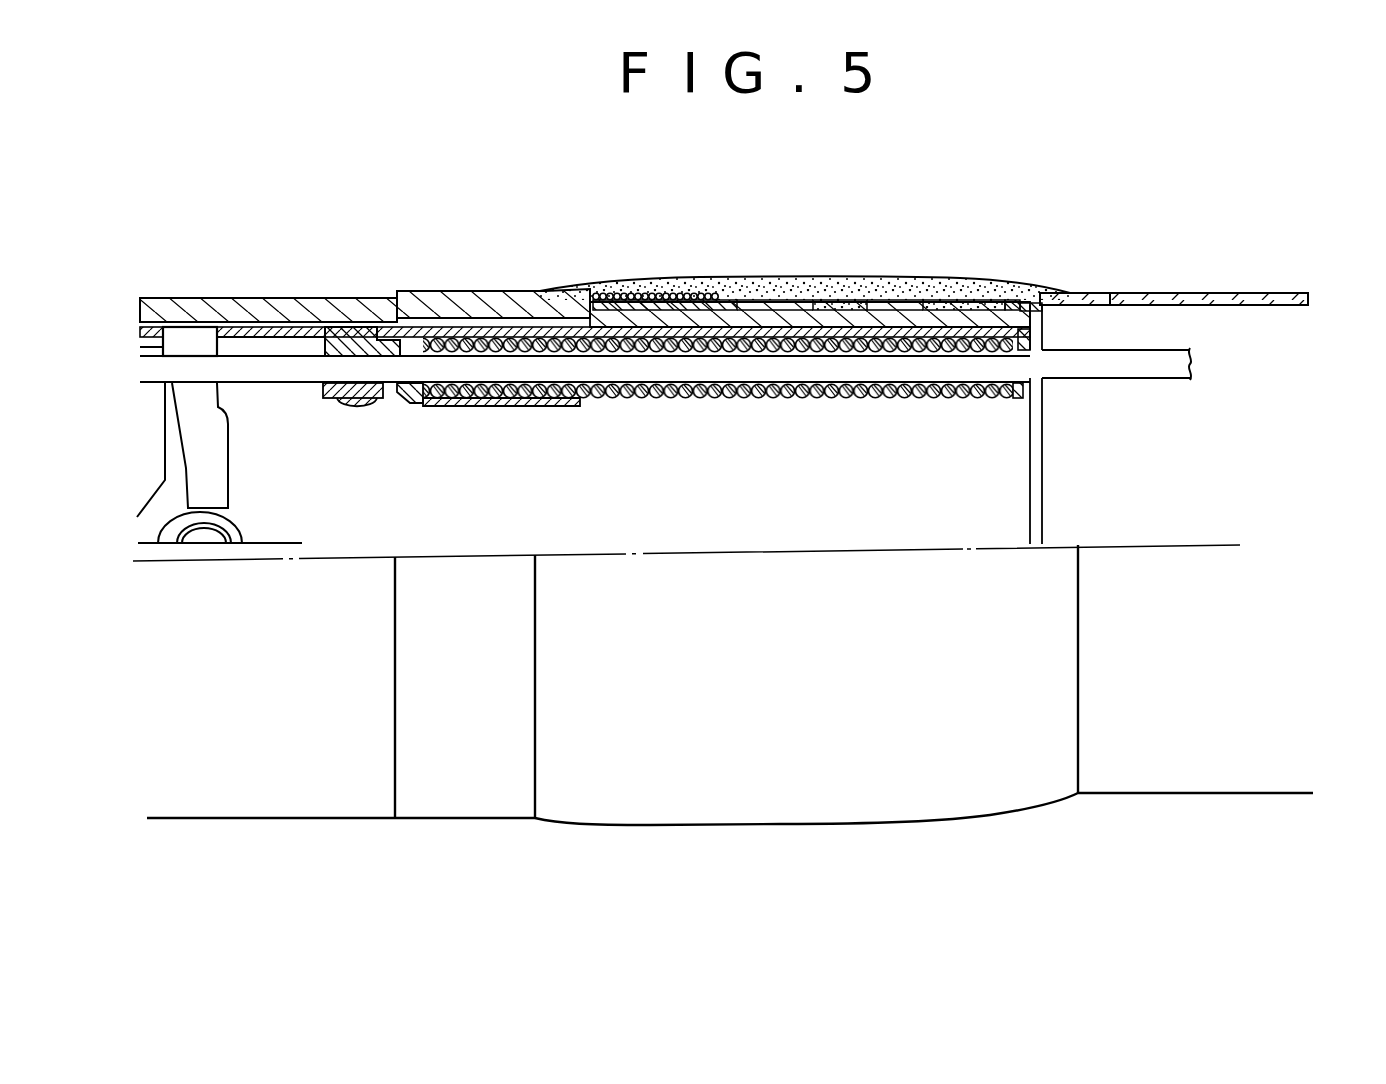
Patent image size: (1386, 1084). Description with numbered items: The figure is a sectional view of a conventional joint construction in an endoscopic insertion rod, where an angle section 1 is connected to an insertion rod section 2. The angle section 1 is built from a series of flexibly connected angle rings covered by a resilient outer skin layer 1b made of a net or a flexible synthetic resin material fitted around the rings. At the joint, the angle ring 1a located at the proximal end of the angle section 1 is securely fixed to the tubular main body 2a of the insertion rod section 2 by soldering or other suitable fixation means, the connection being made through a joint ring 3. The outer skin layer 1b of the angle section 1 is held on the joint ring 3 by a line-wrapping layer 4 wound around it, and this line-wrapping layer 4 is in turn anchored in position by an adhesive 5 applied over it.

The angle section 1 is at (226, 290).
The angle ring 1a is at (300, 297).
The outer skin layer 1b is at (470, 292).
The insertion rod section 2 is at (1206, 280).
The tubular main body 2a is at (1090, 297).
The joint ring 3 is at (767, 300).
The line-wrapping layer 4 is at (683, 293).
The adhesive 5 is at (940, 287).